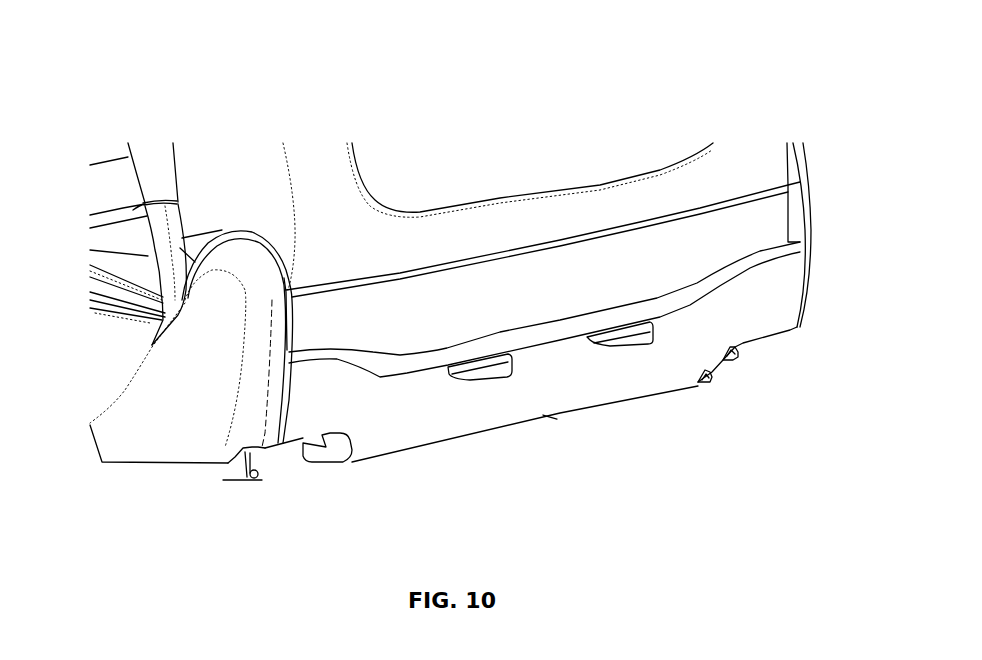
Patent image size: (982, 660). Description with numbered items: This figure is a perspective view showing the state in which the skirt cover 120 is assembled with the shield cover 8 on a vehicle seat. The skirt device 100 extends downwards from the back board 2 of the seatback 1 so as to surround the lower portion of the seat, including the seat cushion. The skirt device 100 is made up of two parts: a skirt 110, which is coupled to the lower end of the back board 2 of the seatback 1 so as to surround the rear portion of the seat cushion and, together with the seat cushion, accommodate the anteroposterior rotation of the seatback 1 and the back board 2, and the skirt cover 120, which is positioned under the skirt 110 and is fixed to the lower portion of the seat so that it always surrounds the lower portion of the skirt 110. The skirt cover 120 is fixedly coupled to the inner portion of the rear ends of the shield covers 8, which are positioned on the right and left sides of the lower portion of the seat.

The seatback 1 is at (276, 168).
The back board 2 is at (322, 188).
The shield cover 8 is at (207, 392).
The skirt device 100 is at (532, 397).
The skirt 110 is at (537, 306).
The skirt cover 120 is at (637, 370).